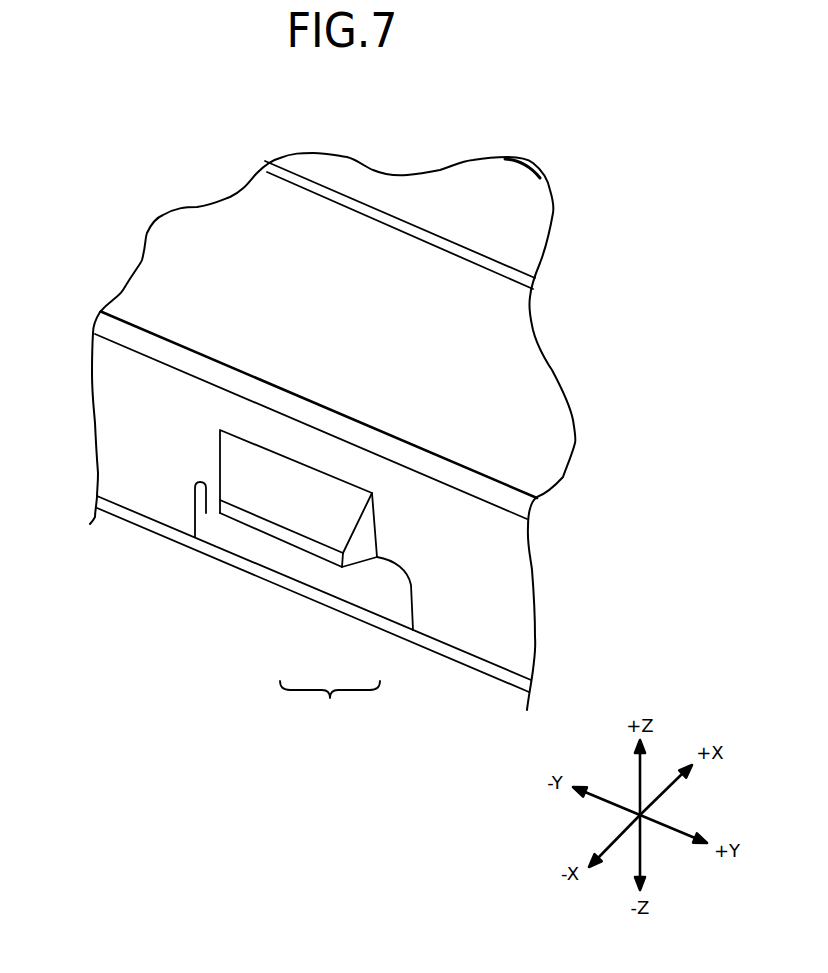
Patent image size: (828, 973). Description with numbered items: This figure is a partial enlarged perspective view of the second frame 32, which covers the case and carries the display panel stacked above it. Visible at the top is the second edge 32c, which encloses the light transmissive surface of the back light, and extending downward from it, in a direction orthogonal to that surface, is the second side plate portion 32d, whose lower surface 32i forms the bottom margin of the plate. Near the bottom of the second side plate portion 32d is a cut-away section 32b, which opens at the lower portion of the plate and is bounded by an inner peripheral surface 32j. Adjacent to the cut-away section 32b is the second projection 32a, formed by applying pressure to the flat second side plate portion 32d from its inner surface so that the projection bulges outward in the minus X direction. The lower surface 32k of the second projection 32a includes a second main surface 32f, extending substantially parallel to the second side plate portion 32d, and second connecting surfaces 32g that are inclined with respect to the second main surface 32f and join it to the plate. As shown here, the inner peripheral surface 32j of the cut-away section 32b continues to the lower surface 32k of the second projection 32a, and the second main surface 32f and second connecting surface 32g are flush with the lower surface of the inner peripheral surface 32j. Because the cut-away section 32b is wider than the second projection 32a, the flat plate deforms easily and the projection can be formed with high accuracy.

The second frame 32 is at (194, 164).
The second edge 32c is at (155, 308).
The second side plate portion 32d is at (123, 433).
The lower surface of the second side plate portion 32i is at (109, 526).
The inner peripheral surface of the cut-away section 32j is at (202, 510).
The second projection 32a is at (268, 507).
The cut-away section 32b is at (292, 567).
The second main surface 32f is at (322, 560).
The second connecting surface 32g is at (362, 560).
The lower surface of the second projection 32k is at (330, 704).